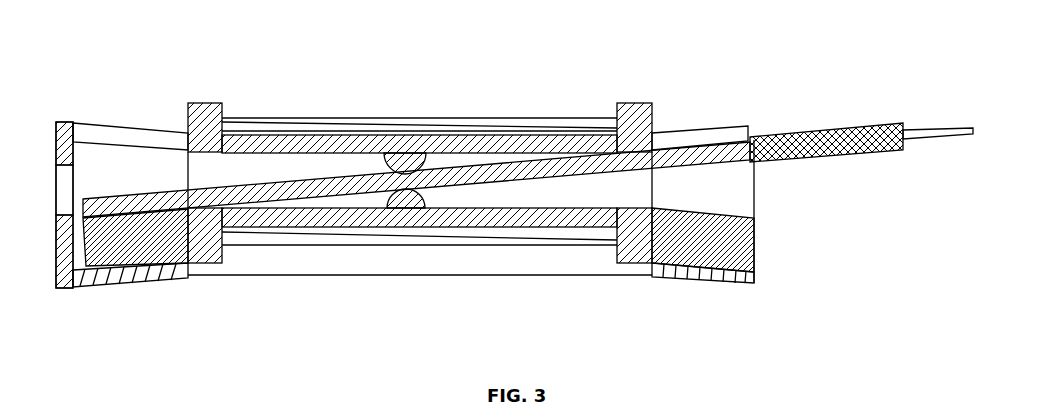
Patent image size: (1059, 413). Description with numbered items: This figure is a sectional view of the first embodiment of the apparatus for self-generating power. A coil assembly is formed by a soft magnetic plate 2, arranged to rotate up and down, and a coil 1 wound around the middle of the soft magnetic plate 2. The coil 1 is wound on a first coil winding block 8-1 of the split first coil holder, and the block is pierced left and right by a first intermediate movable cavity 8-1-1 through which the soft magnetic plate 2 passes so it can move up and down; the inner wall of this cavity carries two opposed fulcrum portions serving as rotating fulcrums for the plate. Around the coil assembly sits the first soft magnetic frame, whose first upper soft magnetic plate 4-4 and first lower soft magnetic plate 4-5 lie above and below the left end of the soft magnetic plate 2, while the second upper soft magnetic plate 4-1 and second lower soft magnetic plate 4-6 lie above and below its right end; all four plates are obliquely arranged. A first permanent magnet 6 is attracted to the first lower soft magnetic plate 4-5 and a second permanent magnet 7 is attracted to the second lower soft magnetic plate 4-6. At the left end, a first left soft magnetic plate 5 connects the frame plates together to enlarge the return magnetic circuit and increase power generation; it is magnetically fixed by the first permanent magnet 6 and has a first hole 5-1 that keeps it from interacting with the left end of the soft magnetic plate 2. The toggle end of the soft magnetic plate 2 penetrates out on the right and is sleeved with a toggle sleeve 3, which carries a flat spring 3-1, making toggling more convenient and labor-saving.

The coil 1 is at (342, 130).
The soft magnetic plate 2 is at (298, 190).
The toggle sleeve 3 is at (810, 130).
The flat spring 3-1 is at (928, 130).
The second upper soft magnetic plate 4-1 is at (703, 130).
The first upper soft magnetic plate 4-4 is at (122, 128).
The first lower soft magnetic plate 4-5 is at (118, 268).
The second lower soft magnetic plate 4-6 is at (670, 277).
The first left soft magnetic plate 5 is at (63, 288).
The first hole 5-1 is at (62, 200).
The first permanent magnet 6 is at (170, 265).
The second permanent magnet 7 is at (732, 253).
The first coil winding block 8-1 is at (225, 108).
The first intermediate movable cavity 8-1-1 is at (462, 195).